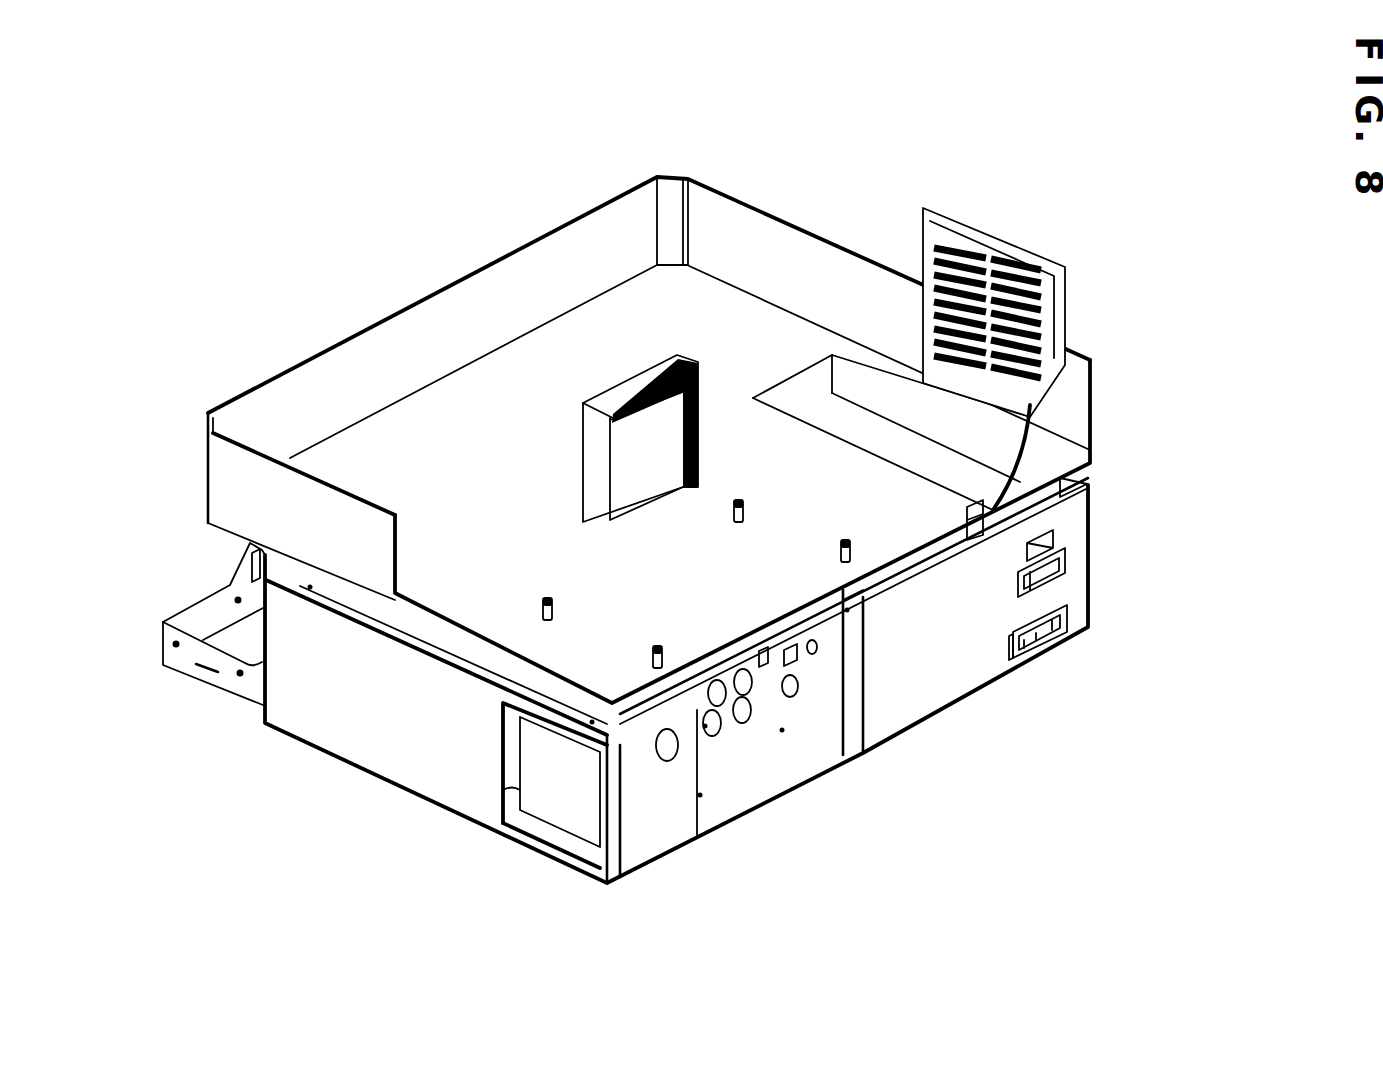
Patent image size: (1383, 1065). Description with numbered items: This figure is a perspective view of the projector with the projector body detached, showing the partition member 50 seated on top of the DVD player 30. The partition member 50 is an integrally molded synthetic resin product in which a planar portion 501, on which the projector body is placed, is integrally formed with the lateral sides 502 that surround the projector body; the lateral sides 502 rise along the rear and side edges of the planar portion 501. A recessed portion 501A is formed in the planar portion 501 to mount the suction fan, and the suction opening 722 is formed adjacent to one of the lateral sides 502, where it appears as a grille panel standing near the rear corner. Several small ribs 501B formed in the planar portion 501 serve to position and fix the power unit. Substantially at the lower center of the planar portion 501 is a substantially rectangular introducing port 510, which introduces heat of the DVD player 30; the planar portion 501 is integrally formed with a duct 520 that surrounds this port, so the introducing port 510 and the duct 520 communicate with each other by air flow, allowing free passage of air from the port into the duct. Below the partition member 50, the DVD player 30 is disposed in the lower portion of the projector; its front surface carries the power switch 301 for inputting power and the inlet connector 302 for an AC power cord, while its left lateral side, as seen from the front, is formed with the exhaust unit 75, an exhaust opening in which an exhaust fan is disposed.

The DVD player 30 is at (1122, 500).
The partition member 50 is at (779, 163).
The exhaust unit 75 is at (548, 800).
The power switch 301 is at (1055, 583).
The inlet connector 302 is at (1022, 638).
The planar portion 501 is at (412, 428).
The recessed portion 501A is at (840, 423).
The ribs 501B is at (548, 596).
The lateral sides 502 is at (523, 277).
The introducing port 510 is at (647, 497).
The duct 520 is at (640, 381).
The suction opening 722 is at (1042, 278).